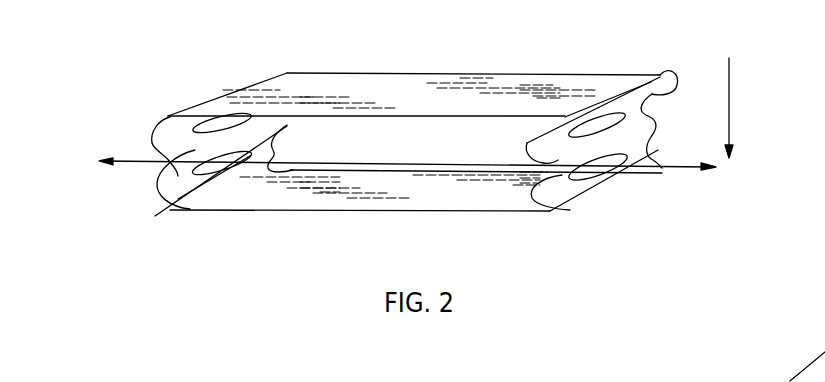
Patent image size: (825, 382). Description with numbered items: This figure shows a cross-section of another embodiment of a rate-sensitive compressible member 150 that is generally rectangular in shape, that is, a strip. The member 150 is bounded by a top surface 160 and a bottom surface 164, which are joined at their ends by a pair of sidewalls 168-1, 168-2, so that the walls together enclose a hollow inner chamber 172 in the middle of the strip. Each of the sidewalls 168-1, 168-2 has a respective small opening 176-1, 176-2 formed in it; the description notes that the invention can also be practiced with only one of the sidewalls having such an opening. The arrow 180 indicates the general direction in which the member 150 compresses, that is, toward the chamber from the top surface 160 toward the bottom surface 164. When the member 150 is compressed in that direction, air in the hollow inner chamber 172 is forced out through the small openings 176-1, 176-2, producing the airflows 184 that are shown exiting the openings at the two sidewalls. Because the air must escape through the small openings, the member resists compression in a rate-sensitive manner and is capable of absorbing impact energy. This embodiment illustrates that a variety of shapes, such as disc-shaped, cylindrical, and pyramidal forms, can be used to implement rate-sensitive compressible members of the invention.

The rate-sensitive compressible member 150 is at (561, 192).
The top surface 160 is at (356, 80).
The bottom surface 164 is at (314, 200).
The sidewall 168-1 is at (152, 147).
The sidewall 168-2 is at (677, 83).
The hollow inner chamber 172 is at (387, 147).
The small opening 176-1 is at (167, 123).
The small opening 176-2 is at (628, 118).
The arrow 180 is at (731, 86).
The airflows 184 is at (142, 165).